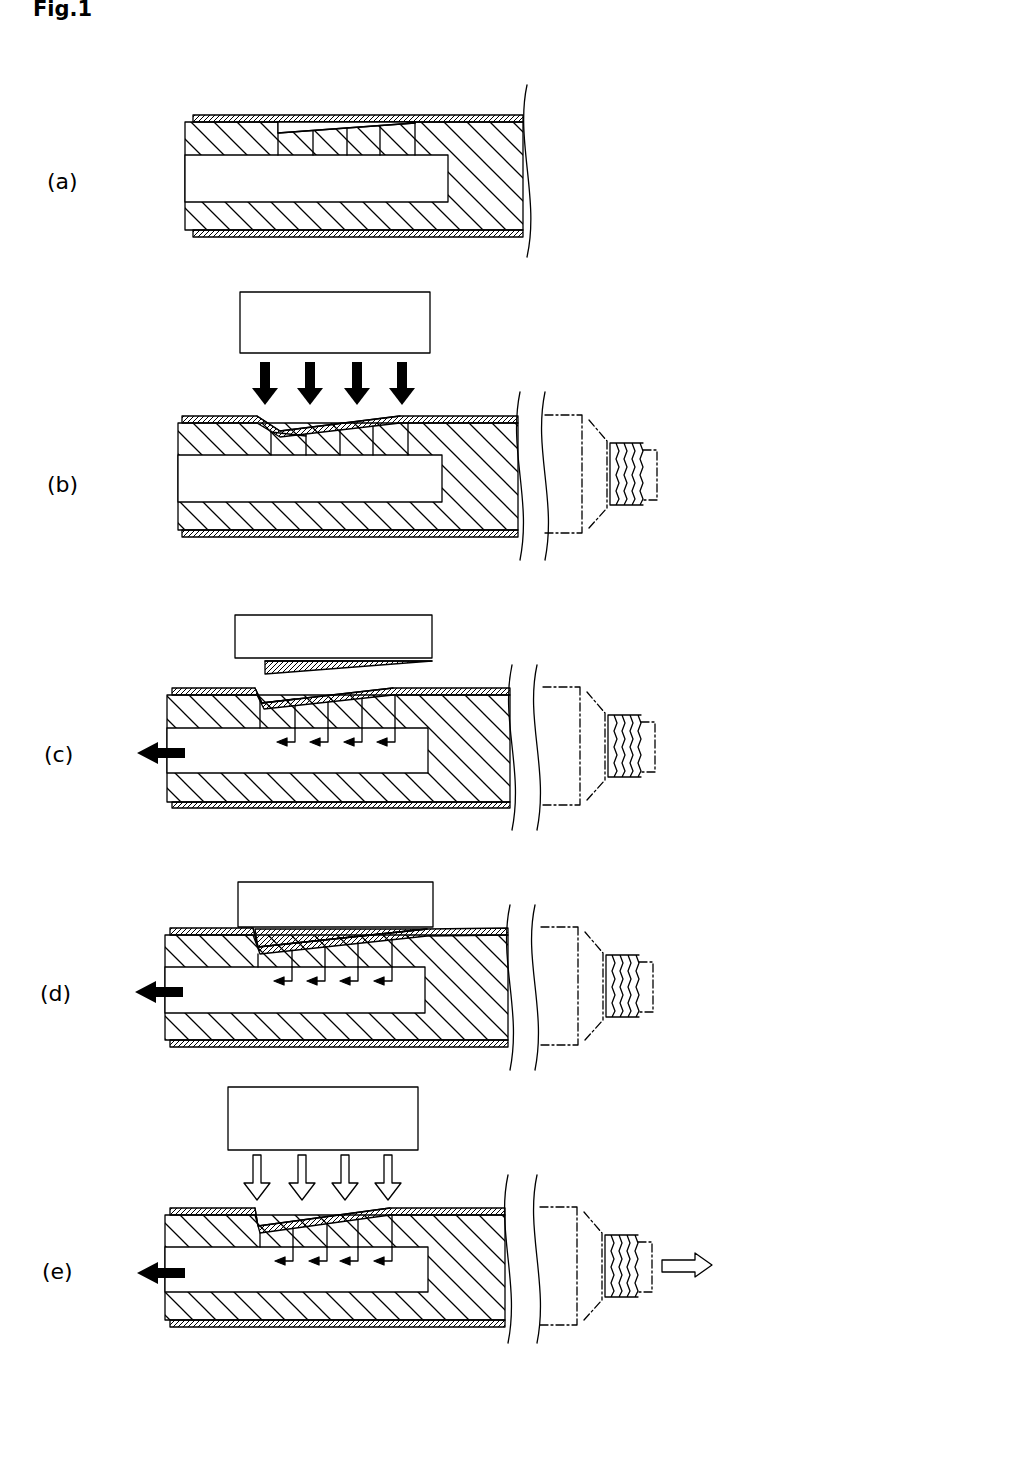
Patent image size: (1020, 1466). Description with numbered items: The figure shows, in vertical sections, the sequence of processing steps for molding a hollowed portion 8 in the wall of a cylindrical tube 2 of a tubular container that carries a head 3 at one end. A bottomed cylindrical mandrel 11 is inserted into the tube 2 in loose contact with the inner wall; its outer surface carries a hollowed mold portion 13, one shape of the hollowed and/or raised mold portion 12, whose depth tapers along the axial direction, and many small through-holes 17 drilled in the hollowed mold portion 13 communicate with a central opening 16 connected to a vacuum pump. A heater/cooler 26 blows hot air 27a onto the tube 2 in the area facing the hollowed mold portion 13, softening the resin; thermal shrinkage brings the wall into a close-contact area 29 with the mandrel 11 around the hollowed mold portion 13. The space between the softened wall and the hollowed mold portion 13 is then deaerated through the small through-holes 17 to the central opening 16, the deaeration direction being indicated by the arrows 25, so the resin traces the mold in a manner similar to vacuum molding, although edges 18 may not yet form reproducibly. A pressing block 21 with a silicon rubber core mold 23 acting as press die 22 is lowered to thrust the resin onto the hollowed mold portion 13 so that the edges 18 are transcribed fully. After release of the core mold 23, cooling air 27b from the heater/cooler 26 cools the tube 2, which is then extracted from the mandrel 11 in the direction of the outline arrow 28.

The tube 2 is at (427, 1210).
The head 3 is at (606, 834).
The hollowed portion 8 is at (307, 1220).
The mandrel 11 is at (197, 1225).
The hollowed and/or raised mold portion 12 is at (345, 89).
The hollowed mold portion 13 is at (270, 700).
The central opening 16 is at (166, 1285).
The small through-holes 17 is at (297, 1225).
The edges 18 is at (266, 706).
The pressing block 21 is at (400, 897).
The press die 22 is at (337, 699).
The core mold 23 is at (320, 933).
The flow direction 25 is at (160, 1267).
The heater/cooler 26 is at (393, 1108).
The hot air 27a is at (410, 368).
The cooling air 27b is at (387, 1167).
The outline arrow 28 is at (677, 1258).
The close-contact area 29 is at (413, 417).